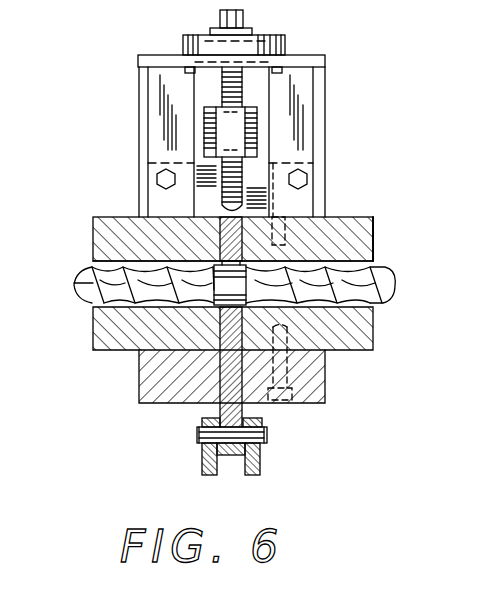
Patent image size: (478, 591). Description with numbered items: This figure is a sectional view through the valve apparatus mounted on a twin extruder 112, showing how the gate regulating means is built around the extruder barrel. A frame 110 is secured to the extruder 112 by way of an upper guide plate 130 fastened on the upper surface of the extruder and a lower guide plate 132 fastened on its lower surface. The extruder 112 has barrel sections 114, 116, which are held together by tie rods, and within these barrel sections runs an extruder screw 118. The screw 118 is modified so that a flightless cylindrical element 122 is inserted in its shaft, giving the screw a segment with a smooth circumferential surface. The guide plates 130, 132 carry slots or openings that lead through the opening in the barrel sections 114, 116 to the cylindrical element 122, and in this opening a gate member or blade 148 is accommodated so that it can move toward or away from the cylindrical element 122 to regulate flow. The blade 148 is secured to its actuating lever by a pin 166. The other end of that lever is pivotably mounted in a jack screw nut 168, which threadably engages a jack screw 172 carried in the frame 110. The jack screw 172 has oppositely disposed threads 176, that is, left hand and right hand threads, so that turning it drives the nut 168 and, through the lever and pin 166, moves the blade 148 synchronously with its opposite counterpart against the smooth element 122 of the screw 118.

The frame 110 is at (305, 127).
The twin extruder 112 is at (105, 352).
The barrel section 114 is at (367, 243).
The barrel section 116 is at (108, 233).
The extruder screw 118 is at (382, 287).
The flightless cylindrical element 122 is at (392, 232).
The upper guide plate 130 is at (308, 195).
The lower guide plate 132 is at (317, 378).
The gate member or blade 148 is at (227, 410).
The pin 166 is at (267, 435).
The jack screw nut 168 is at (227, 131).
The jack screw 172 is at (237, 88).
The thread 176 is at (220, 188).